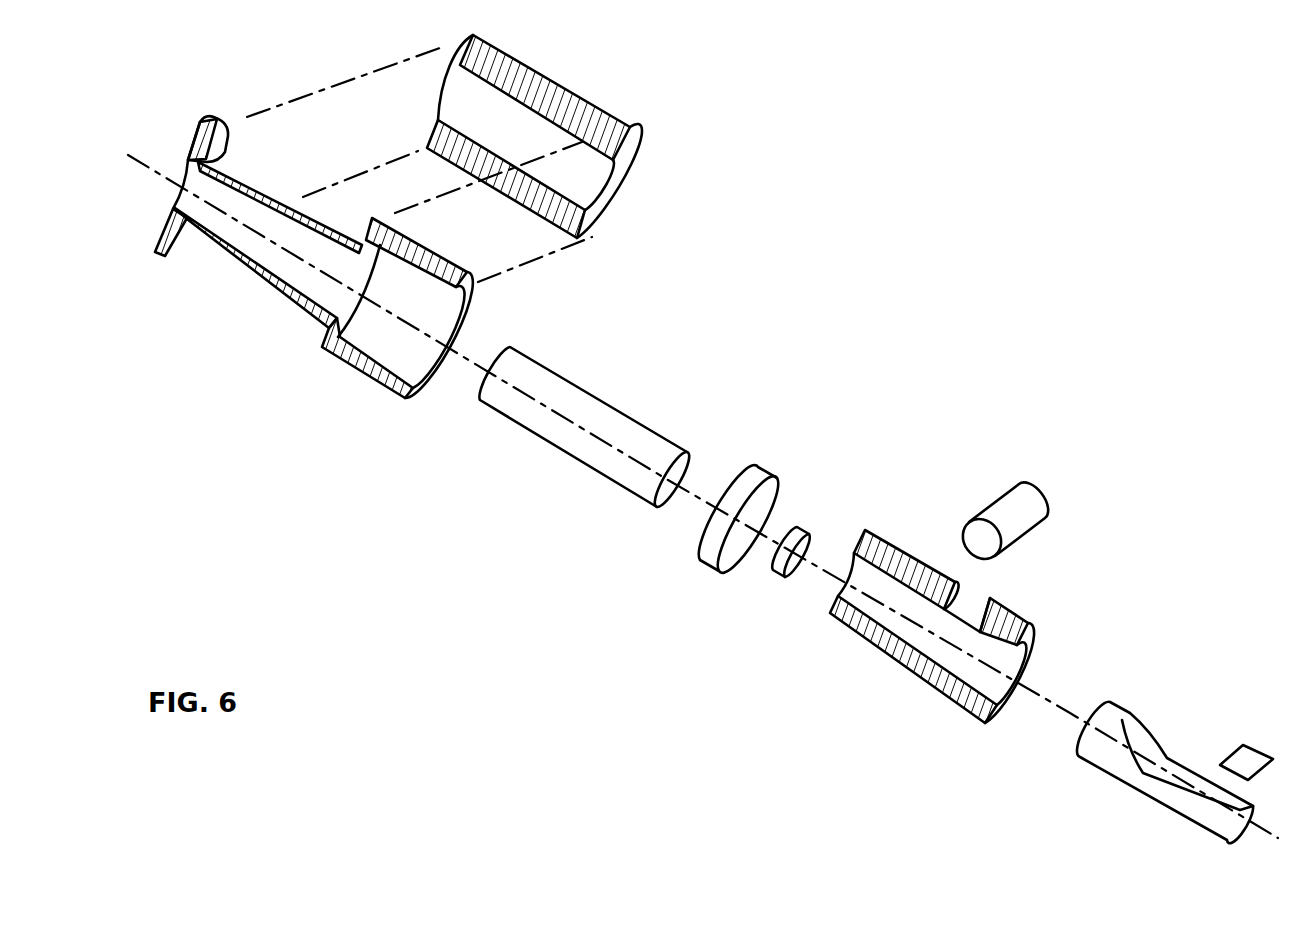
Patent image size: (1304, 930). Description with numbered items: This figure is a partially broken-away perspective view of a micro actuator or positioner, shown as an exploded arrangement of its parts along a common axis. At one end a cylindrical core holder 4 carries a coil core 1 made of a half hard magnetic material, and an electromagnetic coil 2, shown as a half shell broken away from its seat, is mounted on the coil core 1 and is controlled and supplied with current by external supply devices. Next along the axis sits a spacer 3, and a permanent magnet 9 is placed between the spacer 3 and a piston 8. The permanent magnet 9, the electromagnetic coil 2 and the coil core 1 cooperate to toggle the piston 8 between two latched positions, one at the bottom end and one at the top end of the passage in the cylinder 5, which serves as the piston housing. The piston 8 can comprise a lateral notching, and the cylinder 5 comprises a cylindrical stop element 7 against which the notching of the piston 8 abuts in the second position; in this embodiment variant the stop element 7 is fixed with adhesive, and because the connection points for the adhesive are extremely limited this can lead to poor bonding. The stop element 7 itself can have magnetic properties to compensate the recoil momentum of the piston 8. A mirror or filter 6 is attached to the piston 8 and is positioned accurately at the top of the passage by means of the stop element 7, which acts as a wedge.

The coil core 1 is at (582, 403).
The electromagnetic coil 2 is at (556, 98).
The spacer 3 is at (760, 478).
The cylindrical core holder 4 is at (407, 392).
The cylinder 5 is at (918, 674).
The mirror or filter 6 is at (1243, 747).
The stop element 7 is at (1008, 506).
The piston 8 is at (1112, 758).
The permanent magnet 9 is at (783, 572).